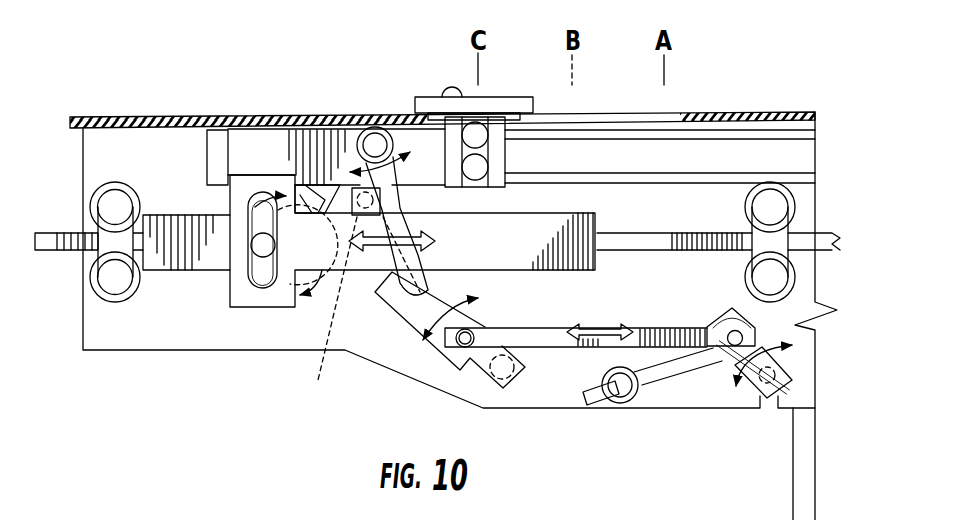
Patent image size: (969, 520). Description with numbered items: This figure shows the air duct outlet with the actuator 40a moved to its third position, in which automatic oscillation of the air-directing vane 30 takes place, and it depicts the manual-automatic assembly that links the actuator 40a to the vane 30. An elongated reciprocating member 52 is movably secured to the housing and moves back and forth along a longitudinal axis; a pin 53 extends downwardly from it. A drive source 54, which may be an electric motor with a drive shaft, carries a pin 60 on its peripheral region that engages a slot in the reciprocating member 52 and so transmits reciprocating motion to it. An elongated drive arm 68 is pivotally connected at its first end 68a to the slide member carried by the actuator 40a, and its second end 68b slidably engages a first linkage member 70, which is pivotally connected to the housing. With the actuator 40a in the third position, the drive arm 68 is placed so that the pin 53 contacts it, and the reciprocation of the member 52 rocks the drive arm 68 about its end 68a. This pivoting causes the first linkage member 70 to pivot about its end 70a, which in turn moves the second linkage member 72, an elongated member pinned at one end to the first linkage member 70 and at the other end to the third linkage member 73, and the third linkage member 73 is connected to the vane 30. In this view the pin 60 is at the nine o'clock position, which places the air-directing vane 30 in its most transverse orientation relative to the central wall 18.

The reciprocating member 52 is at (181, 216).
The drive source 54 is at (270, 276).
The pin 60 is at (252, 246).
The pin 53 is at (318, 380).
The drive arm 68 is at (385, 206).
The first end of drive arm 68a is at (392, 130).
The second end of drive arm 68b is at (413, 293).
The first linkage member 70 is at (480, 318).
The end of first linkage member 70a is at (503, 368).
The second linkage member 72 is at (667, 328).
The third linkage member 73 is at (760, 345).
The air-directing vane 30 is at (785, 368).
The central wall 18 is at (793, 464).
The actuator 40a is at (512, 97).